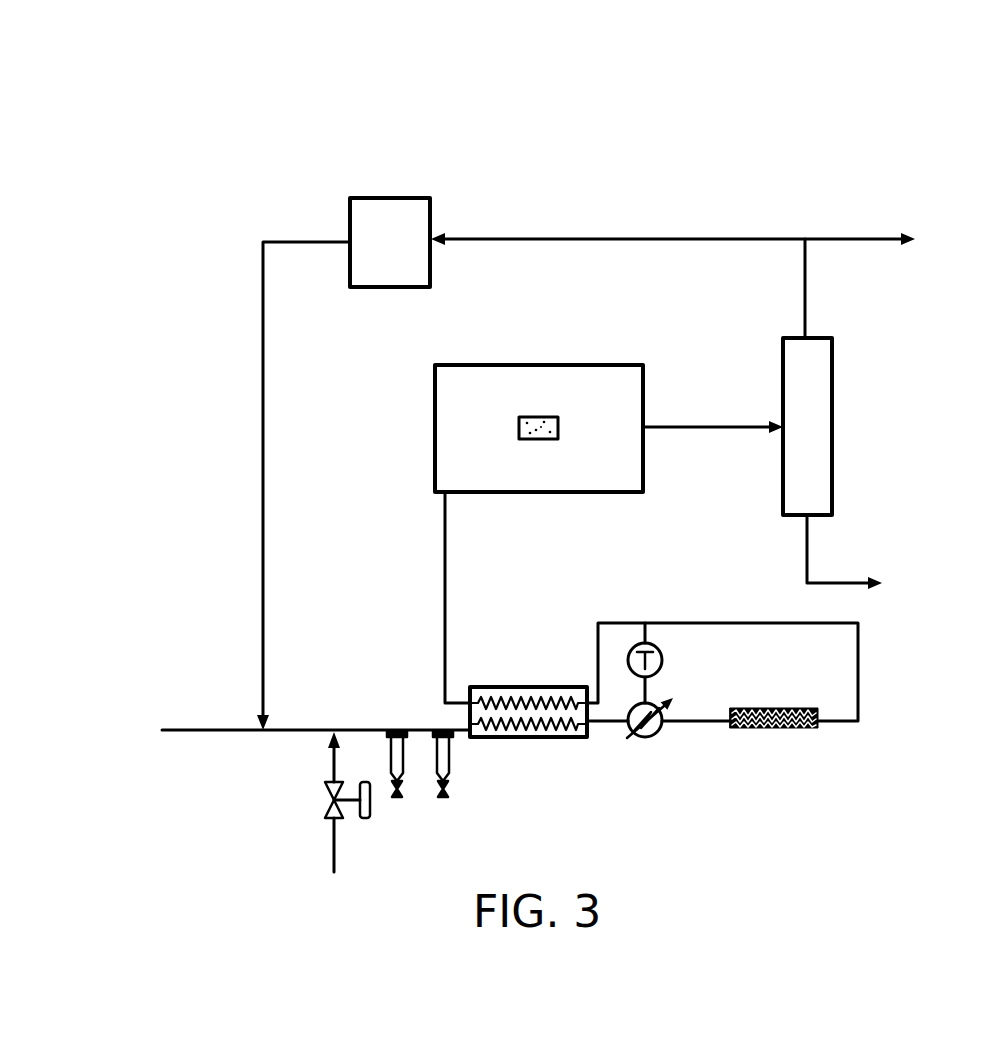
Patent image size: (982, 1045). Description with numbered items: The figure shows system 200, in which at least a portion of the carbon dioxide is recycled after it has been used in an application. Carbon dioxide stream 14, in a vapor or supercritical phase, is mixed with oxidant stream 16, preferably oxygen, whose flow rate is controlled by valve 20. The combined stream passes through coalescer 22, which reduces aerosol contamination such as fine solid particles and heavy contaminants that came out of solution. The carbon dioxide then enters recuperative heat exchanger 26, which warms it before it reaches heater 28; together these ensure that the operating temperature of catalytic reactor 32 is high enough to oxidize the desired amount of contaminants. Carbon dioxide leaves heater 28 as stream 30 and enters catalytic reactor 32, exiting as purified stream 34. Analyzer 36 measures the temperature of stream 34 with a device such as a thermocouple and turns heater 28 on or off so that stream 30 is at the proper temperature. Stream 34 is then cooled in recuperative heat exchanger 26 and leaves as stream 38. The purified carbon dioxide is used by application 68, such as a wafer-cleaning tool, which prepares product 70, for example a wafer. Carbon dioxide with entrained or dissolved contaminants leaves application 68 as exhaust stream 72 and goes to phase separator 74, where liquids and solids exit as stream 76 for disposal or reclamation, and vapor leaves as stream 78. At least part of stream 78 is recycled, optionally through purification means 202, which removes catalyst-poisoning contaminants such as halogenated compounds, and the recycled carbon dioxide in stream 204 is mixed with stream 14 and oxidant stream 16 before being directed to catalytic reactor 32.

The system 200 is at (943, 126).
The purification means 202 is at (364, 258).
The recycled carbon dioxide stream 204 is at (262, 462).
The carbon dioxide stream 14 is at (209, 728).
The oxidant stream 16 is at (332, 758).
The valve 20 is at (331, 801).
The coalescer 22 is at (440, 783).
The recuperative heat exchanger 26 is at (536, 740).
The heater 28 is at (645, 740).
The stream 30 is at (703, 724).
The catalytic reactor 32 is at (775, 730).
The stream 34 is at (832, 725).
The analyzer 36 is at (663, 657).
The stream 38 is at (444, 565).
The application 68 is at (572, 493).
The product 70 is at (560, 418).
The exhaust stream 72 is at (708, 422).
The phase separator 74 is at (790, 444).
The stream 76 is at (833, 582).
The stream 78 is at (806, 272).